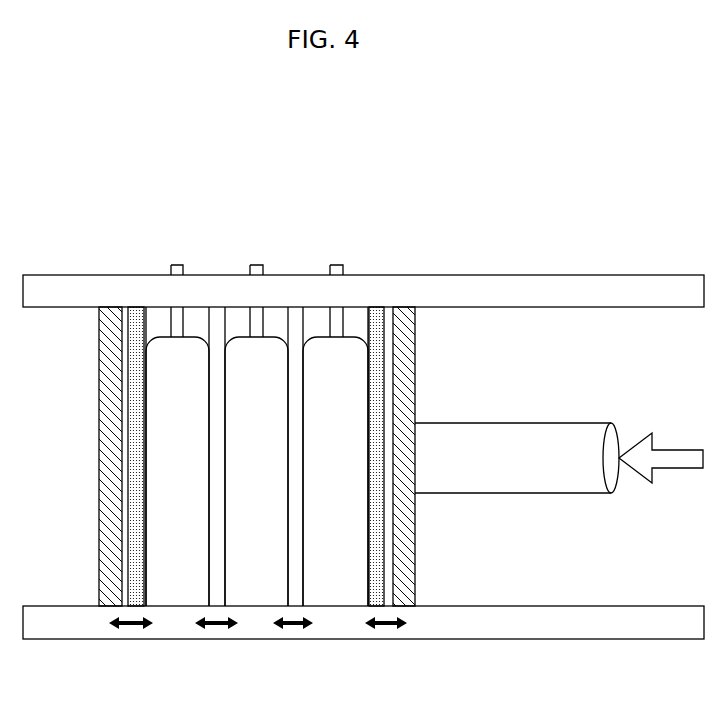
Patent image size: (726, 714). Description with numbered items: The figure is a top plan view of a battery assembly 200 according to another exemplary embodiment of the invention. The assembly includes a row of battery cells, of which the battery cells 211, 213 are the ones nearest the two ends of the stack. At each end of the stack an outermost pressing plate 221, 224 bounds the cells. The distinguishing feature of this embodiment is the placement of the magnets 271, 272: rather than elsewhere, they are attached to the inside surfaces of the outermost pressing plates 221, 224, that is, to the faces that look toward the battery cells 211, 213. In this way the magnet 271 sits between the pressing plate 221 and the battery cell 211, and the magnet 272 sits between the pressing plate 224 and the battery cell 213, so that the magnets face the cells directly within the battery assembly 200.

The battery assembly 200 is at (340, 128).
The battery cell 211 is at (172, 592).
The battery cell 213 is at (345, 605).
The outermost pressing plate 221 is at (125, 313).
The outermost pressing plate 224 is at (391, 314).
The magnet 271 is at (138, 478).
The magnet 272 is at (375, 565).